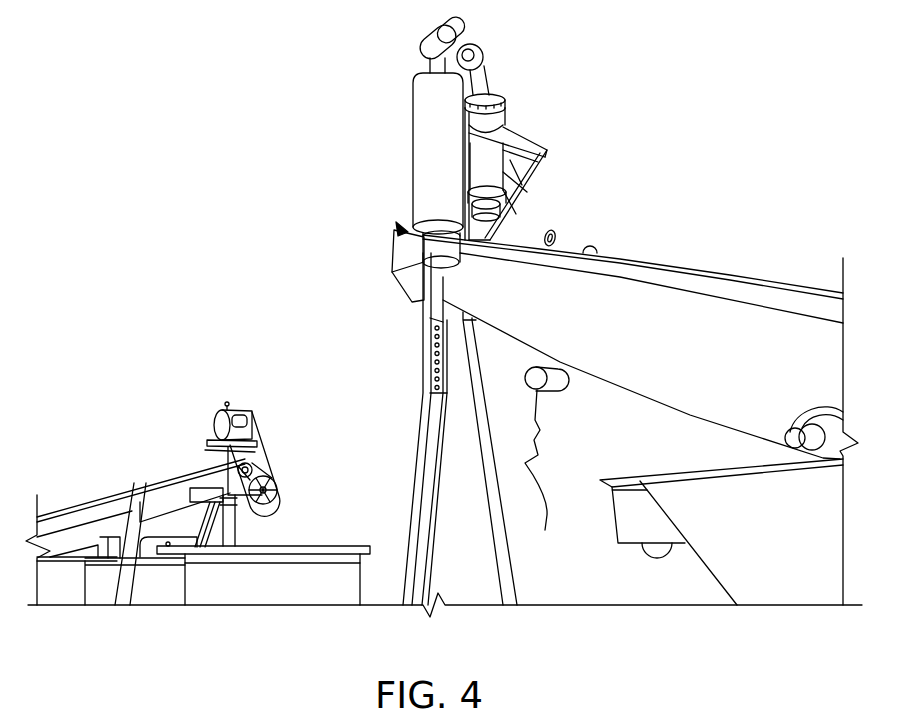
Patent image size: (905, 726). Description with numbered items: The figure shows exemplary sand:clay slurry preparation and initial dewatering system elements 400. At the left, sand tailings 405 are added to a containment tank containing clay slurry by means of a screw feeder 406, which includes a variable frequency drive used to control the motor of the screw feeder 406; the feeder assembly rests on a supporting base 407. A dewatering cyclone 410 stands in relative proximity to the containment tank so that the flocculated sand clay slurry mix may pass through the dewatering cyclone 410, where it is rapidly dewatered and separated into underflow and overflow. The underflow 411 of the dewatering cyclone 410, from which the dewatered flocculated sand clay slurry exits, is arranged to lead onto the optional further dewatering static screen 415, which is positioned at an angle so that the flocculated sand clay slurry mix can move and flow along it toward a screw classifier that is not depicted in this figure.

The sand:clay slurry preparation and initial dewatering system elements 400 is at (161, 108).
The sand tailings 405 is at (193, 467).
The screw feeder 406 is at (242, 404).
The feeder base 407 is at (289, 598).
The dewatering cyclone 410 is at (515, 101).
The underflow 411 is at (497, 223).
The static screen 415 is at (650, 268).